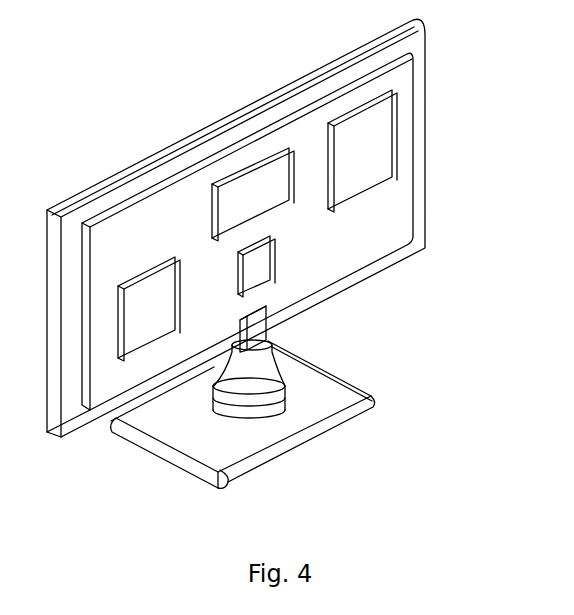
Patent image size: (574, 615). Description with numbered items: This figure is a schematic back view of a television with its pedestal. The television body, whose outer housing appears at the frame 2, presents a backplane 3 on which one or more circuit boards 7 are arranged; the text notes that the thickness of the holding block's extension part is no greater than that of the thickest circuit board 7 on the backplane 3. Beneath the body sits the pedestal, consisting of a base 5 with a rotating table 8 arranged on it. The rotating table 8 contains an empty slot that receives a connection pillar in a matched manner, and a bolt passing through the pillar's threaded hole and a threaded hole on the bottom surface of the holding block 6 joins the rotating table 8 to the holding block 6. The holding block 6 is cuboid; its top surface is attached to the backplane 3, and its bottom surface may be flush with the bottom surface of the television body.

The display frame 2 is at (417, 37).
The backplane 3 is at (352, 229).
The base 5 is at (335, 419).
The holding block 6 is at (263, 332).
The circuit board 7 is at (157, 287).
The rotating table 8 is at (265, 382).